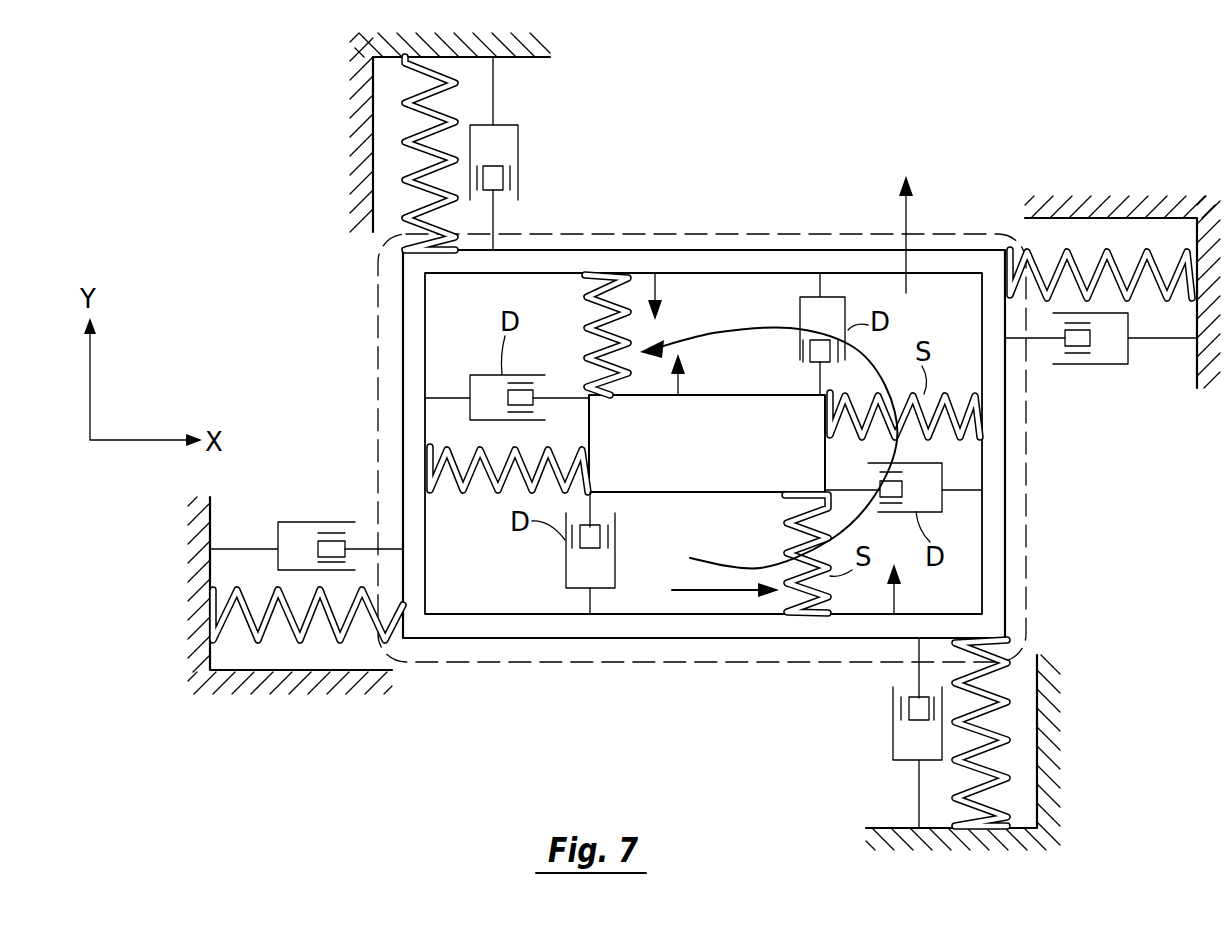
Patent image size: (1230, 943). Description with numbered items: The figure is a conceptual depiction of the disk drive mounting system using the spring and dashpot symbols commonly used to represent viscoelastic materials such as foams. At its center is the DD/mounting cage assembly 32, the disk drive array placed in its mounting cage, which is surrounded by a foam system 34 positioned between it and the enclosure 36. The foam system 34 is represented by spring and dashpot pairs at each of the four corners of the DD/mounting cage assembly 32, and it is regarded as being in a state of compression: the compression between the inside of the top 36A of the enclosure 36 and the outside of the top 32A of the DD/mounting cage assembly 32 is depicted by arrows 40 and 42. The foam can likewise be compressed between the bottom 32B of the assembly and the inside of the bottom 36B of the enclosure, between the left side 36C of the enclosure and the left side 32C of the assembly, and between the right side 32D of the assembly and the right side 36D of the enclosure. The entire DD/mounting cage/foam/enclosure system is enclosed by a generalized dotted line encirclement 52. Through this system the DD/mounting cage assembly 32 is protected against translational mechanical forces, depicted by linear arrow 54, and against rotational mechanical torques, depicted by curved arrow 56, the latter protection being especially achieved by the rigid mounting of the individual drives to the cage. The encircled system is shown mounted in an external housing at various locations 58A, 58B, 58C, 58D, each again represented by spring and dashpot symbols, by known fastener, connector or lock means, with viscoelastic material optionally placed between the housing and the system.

The DD/mounting cage assembly 32 is at (725, 456).
The top of the DD/mounting cage assembly 32A is at (732, 395).
The bottom of the DD/mounting cage assembly 32B is at (718, 494).
The left side of the DD/mounting cage assembly 32C is at (587, 420).
The right side of the DD/mounting cage assembly 32D is at (826, 465).
The foam system 34 is at (456, 285).
The enclosure 36 is at (777, 232).
The top of the enclosure system 36A is at (735, 276).
The bottom of the enclosure system 36B is at (505, 612).
The left side of the enclosure system 36C is at (428, 366).
The right side of the enclosure system 36D is at (978, 370).
The arrow 40 is at (681, 385).
The arrow 42 is at (670, 270).
The dotted line encirclement 52 is at (708, 228).
The linear arrow 54 is at (692, 578).
The curved arrow 56 is at (720, 330).
The mounting location 58A is at (1056, 775).
The mounting location 58B is at (1116, 208).
The mounting location 58C is at (360, 156).
The mounting location 58D is at (262, 680).